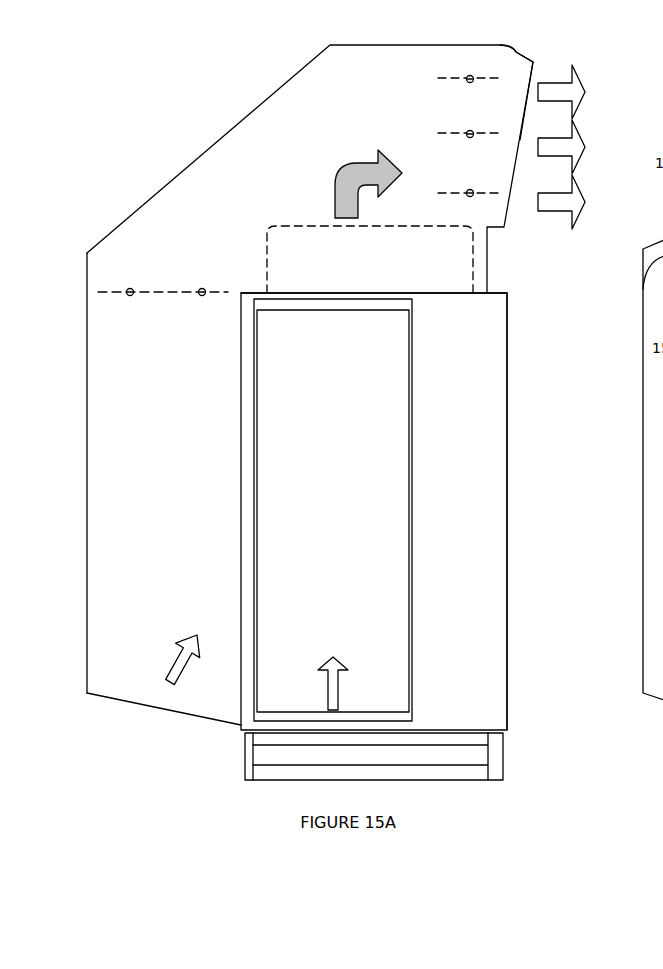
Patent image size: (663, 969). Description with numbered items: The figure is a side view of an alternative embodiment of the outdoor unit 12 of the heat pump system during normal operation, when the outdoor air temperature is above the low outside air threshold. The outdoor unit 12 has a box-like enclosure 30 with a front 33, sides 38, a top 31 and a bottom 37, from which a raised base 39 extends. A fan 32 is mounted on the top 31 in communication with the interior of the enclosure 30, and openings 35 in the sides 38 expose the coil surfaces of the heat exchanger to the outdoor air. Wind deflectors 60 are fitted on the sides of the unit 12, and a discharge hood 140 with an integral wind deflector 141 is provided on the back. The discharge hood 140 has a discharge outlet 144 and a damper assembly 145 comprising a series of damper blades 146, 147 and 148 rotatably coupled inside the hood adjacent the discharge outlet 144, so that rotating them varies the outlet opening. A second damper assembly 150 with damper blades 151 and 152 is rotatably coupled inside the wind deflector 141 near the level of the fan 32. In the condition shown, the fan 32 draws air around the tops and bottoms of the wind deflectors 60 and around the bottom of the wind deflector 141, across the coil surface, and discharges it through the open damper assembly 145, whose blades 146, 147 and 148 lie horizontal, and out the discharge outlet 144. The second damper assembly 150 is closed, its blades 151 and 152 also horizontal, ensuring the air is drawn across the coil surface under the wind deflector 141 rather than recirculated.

The outdoor unit 12 is at (417, 511).
The enclosure 30 is at (507, 452).
The top 31 is at (438, 294).
The fan 32 is at (450, 240).
The front 33 is at (507, 575).
The openings 35 is at (412, 422).
The bottom 37 is at (447, 725).
The sides 38 is at (453, 692).
The raised base 39 is at (245, 752).
The wind deflectors 60 is at (377, 520).
The discharge hood 140 is at (288, 78).
The wind deflector 141 is at (87, 268).
The discharge outlet 144 is at (527, 92).
The damper assembly 145 is at (478, 106).
The damper blade 146 is at (490, 78).
The damper blade 147 is at (485, 133).
The damper blade 148 is at (497, 192).
The second damper assembly 150 is at (158, 305).
The damper blade 151 is at (115, 291).
The damper blade 152 is at (173, 292).